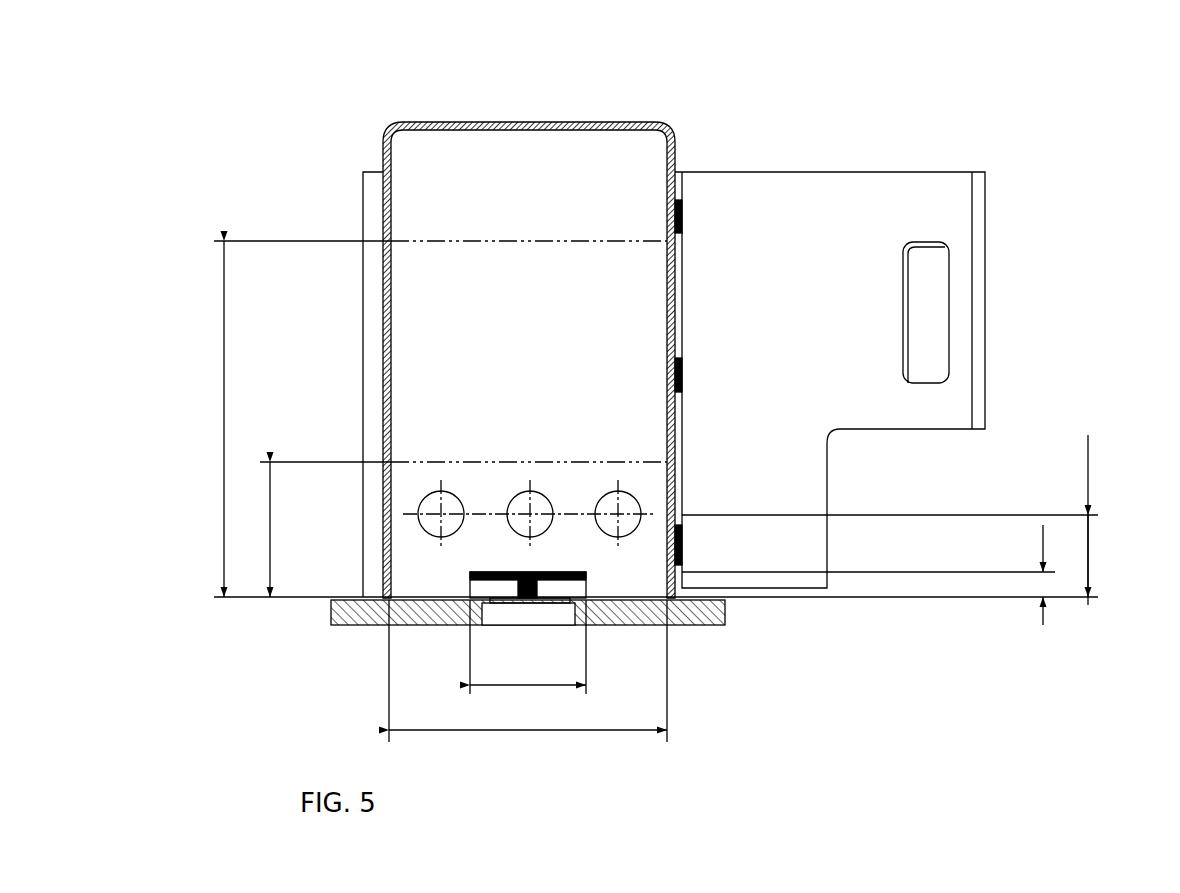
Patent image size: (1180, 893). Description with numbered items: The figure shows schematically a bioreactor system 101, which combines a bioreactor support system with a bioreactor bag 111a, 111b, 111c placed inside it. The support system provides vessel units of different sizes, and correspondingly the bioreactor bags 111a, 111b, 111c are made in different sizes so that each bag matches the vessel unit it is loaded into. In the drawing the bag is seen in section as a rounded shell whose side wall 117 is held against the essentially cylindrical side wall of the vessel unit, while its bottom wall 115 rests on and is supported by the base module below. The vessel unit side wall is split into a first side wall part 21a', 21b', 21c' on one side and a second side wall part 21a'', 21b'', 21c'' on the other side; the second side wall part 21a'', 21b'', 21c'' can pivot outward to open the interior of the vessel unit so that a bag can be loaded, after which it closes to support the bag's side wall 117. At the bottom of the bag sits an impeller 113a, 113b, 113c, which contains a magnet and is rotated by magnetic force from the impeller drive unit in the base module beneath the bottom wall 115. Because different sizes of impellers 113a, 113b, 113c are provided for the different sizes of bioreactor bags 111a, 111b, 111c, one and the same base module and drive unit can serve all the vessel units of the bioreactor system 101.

The bioreactor system 101 is at (775, 94).
The bioreactor bag 111a is at (564, 327).
The bioreactor bag 111b is at (564, 327).
The bioreactor bag 111c is at (675, 80).
The impeller 113a is at (686, 624).
The impeller 113b is at (686, 624).
The impeller 113c is at (586, 573).
The bottom wall 115 is at (420, 600).
The side wall 117 is at (383, 345).
The first side wall part 21a' is at (260, 345).
The first side wall part 21b' is at (260, 345).
The first side wall part 21c' is at (260, 345).
The second side wall part 21a'' is at (885, 341).
The second side wall part 21b'' is at (885, 341).
The second side wall part 21c'' is at (885, 341).